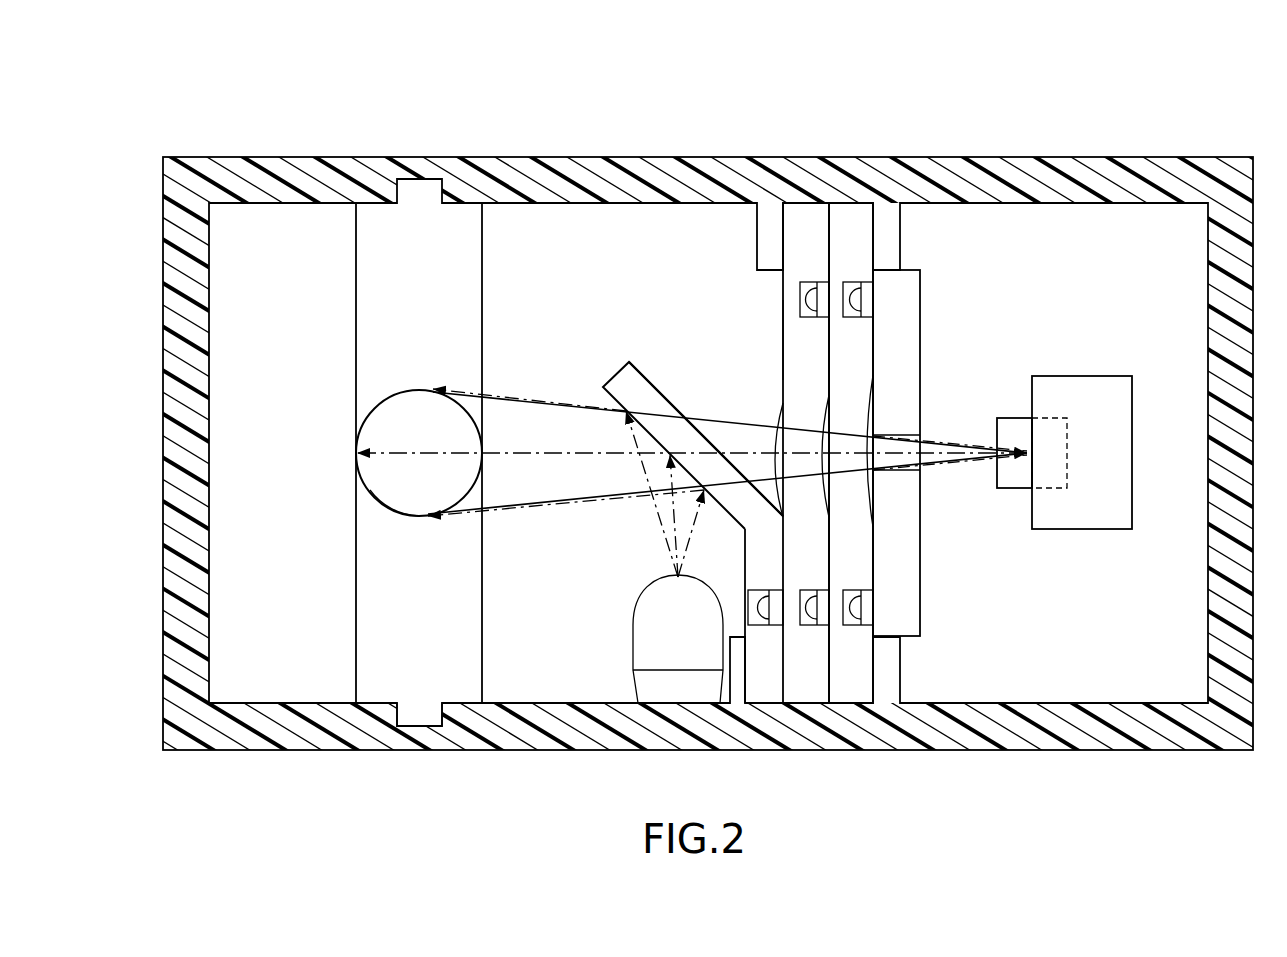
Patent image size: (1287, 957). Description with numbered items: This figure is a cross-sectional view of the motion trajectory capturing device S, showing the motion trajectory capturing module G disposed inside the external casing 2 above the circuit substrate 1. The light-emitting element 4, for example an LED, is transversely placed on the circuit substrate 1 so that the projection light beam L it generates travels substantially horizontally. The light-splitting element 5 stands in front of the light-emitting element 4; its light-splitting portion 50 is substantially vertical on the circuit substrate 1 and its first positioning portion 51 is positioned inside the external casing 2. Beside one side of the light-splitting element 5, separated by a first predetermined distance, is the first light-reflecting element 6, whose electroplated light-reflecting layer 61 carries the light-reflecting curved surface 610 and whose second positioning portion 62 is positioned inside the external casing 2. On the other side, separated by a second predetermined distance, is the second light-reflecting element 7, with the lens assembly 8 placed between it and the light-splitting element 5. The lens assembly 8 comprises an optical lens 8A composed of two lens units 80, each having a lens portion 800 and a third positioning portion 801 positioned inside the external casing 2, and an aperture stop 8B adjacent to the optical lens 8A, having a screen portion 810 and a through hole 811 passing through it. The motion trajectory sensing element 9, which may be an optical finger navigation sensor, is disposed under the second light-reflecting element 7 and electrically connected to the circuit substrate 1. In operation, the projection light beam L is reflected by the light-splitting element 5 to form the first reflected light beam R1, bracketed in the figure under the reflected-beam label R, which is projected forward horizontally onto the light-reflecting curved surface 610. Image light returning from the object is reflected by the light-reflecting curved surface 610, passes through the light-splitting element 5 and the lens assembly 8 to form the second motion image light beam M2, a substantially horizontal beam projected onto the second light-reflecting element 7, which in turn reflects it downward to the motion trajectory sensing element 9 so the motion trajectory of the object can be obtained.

The circuit substrate 1 is at (238, 272).
The external casing 2 is at (160, 350).
The light-emitting element 4 is at (662, 675).
The light-splitting element 5 is at (613, 371).
The light-splitting portion 50 is at (643, 393).
The first positioning portion 51 is at (765, 680).
The first light-reflecting element 6 is at (381, 662).
The electroplated light-reflecting layer 61 is at (371, 479).
The light-reflecting curved surface 610 is at (402, 497).
The second positioning portion 62 is at (420, 655).
The second light-reflecting element 7 is at (1083, 374).
The lens assembly 8 is at (930, 308).
The optical lens 8A is at (880, 102).
The aperture stop 8B is at (1018, 547).
The lens unit 80 is at (808, 220).
The lens portion 800 is at (777, 410).
The third positioning portion 801 is at (797, 333).
The screen portion 810 is at (900, 592).
The through hole 811 is at (897, 462).
The motion trajectory sensing element 9 is at (1009, 416).
The motion trajectory capturing module G is at (260, 675).
The projection light beam L is at (673, 556).
The second motion image light beam M2 is at (948, 450).
The light path R is at (498, 585).
The first reflected light beam R1 is at (538, 403).
The motion trajectory capturing device S is at (119, 104).